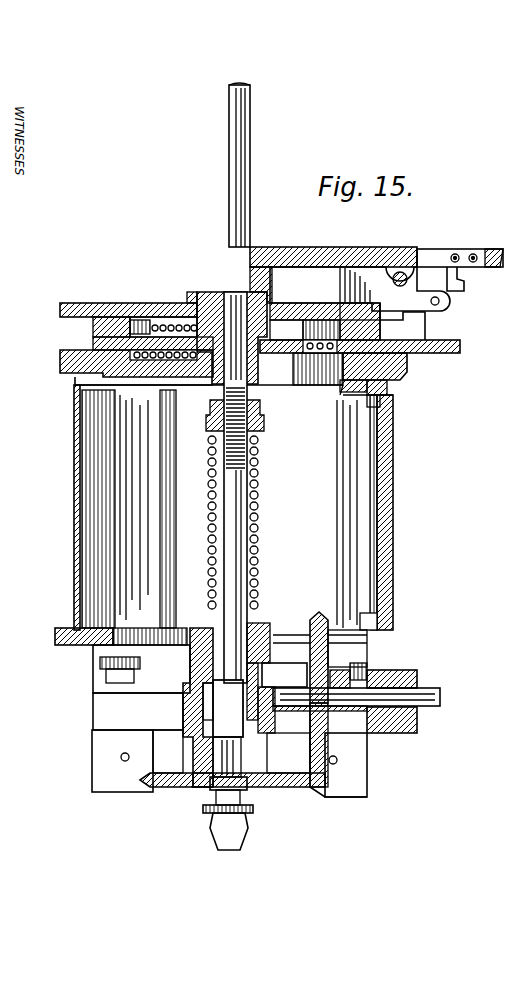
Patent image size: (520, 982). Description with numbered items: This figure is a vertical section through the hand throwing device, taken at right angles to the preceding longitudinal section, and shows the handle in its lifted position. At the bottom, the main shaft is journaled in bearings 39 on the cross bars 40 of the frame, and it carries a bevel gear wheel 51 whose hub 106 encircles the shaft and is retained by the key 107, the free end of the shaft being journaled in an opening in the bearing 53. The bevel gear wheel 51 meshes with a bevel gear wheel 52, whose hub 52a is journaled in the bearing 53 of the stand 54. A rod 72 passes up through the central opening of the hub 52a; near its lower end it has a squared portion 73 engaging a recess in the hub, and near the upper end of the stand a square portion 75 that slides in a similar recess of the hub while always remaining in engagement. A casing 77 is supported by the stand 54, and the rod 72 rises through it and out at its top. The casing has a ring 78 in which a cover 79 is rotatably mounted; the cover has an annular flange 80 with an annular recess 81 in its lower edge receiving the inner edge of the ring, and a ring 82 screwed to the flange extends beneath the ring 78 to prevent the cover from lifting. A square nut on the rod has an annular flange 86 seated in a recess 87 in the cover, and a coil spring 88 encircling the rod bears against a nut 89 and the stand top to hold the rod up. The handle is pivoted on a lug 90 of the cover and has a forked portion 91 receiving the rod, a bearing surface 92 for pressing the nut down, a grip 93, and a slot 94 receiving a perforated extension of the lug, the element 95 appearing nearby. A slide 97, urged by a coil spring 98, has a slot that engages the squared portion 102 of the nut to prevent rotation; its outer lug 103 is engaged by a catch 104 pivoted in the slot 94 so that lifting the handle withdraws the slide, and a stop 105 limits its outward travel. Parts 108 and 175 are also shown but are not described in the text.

The bearings 39 is at (422, 677).
The cross bars 40 is at (418, 730).
The bevel gear wheel 51 is at (317, 750).
The bevel gear wheel 52 is at (158, 788).
The hub 52a is at (200, 788).
The bearing 53 is at (183, 710).
The stand 54 is at (100, 743).
The rod 72 is at (260, 456).
The squared portion 73 is at (250, 797).
The square portion 75 is at (239, 680).
The casing 77 is at (396, 425).
The ring 78 is at (410, 366).
The cover 79 is at (86, 303).
The annular flange 80 is at (347, 322).
The annular recess 81 is at (430, 401).
The ring 82 is at (327, 386).
The annular flange 86 is at (268, 285).
The recess 87 is at (187, 293).
The coil spring 88 is at (260, 468).
The nut 89 is at (402, 273).
The lug 90 is at (368, 300).
The forked portion 91 is at (219, 252).
The bearing surface 92 is at (212, 290).
The grip 93 is at (496, 248).
The slot 94 is at (442, 257).
The pivot 95 is at (441, 304).
The slide 97 is at (93, 340).
The coil spring 98 is at (146, 318).
The squared portion 102 is at (302, 345).
The lug 103 is at (445, 348).
The catch 104 is at (465, 285).
The stop 105 is at (340, 395).
The hub 106 is at (350, 676).
The key 107 is at (352, 684).
The housing 108 is at (141, 669).
The block 175 is at (284, 675).